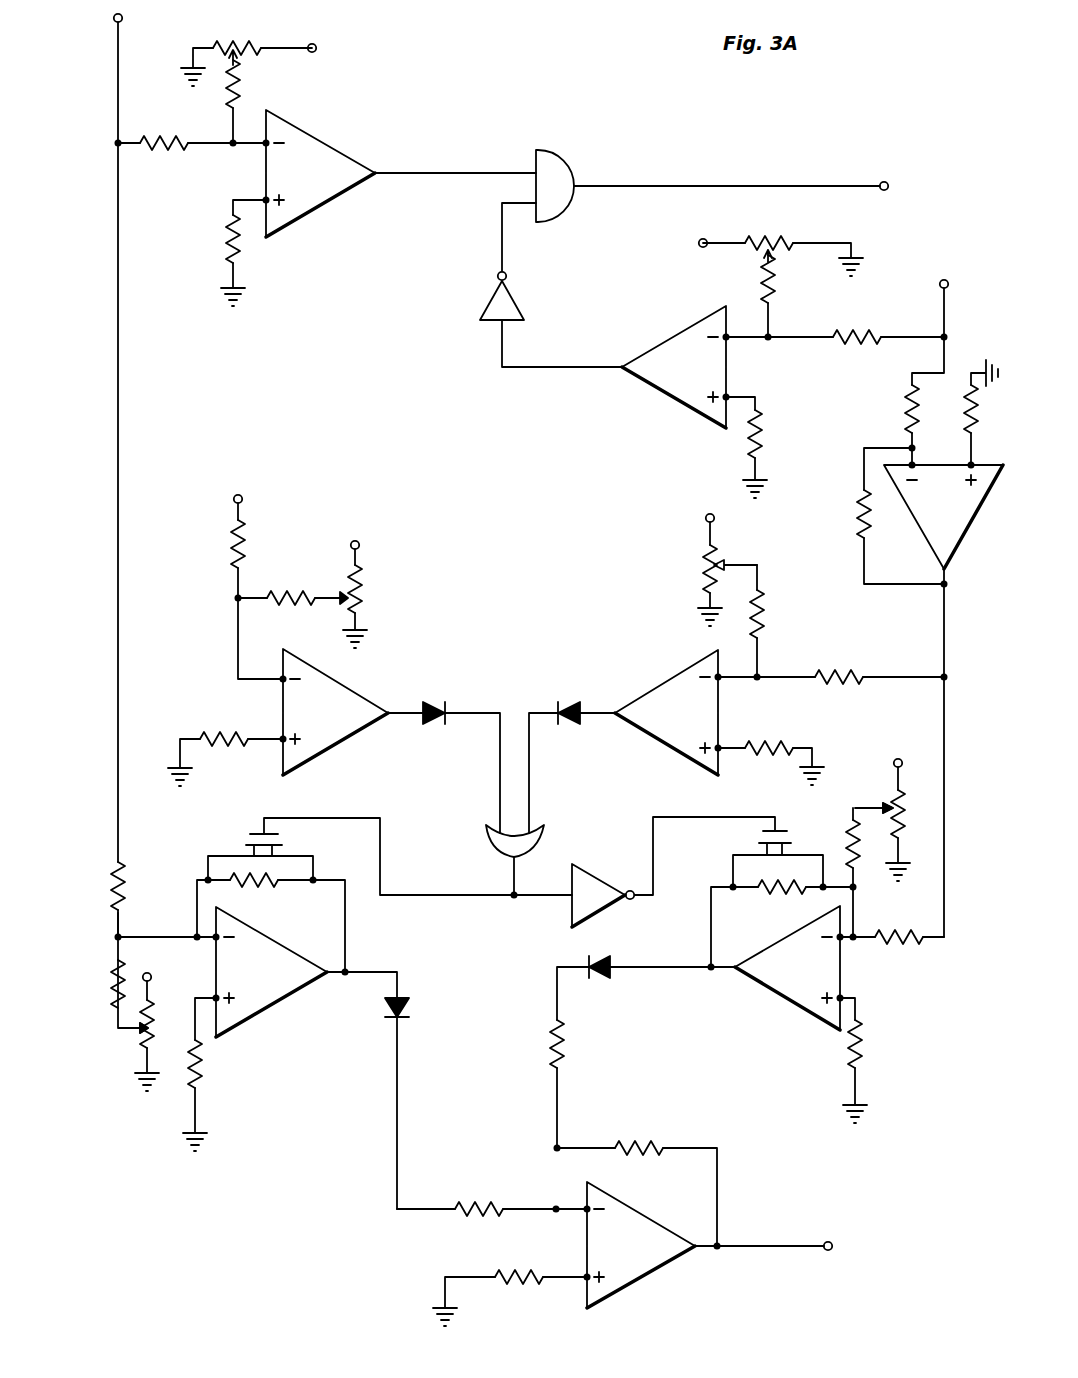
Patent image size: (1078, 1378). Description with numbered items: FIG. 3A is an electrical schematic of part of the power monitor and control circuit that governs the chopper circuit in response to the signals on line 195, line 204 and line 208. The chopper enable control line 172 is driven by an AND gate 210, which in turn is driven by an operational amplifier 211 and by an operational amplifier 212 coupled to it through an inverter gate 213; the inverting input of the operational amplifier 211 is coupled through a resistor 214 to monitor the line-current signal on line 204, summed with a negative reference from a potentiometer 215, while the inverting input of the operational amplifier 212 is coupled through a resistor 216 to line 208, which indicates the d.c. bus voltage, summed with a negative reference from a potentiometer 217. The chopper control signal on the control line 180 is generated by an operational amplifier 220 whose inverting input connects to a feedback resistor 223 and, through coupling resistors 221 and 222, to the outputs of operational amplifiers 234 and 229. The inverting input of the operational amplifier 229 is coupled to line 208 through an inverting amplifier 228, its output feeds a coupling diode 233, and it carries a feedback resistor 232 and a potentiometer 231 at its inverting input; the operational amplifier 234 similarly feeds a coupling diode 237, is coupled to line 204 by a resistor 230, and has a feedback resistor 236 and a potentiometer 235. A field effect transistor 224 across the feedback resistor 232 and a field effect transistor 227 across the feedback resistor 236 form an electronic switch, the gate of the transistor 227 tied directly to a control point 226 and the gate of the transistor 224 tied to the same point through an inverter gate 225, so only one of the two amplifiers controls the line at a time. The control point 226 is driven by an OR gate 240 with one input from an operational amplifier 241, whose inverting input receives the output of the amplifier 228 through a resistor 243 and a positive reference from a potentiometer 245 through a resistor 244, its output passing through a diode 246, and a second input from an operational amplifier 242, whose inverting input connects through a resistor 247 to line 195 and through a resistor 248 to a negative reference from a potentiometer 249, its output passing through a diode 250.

The line 204 is at (124, 17).
The resistor 214 is at (166, 150).
The potentiometer 215 is at (250, 45).
The operational amplifier 211 is at (328, 184).
The AND gate 210 is at (566, 168).
The inverter gate 213 is at (524, 302).
The operational amplifier 212 is at (700, 378).
The potentiometer 217 is at (770, 240).
The resistor 216 is at (866, 330).
The line 208 is at (948, 280).
The chopper enable control line 172 is at (880, 182).
The inverting amplifier 228 is at (961, 516).
The resistor 243 is at (832, 674).
The potentiometer 245 is at (703, 570).
The resistor 244 is at (770, 614).
The operational amplifier 241 is at (687, 726).
The diode 246 is at (576, 726).
The line 195 is at (242, 495).
The resistor 247 is at (232, 558).
The resistor 248 is at (288, 592).
The potentiometer 249 is at (362, 592).
The operational amplifier 242 is at (336, 718).
The diode 250 is at (420, 722).
The OR gate 240 is at (496, 854).
The control point 226 is at (512, 900).
The inverter gate 225 is at (604, 924).
The field effect transistor 224 is at (786, 834).
The feedback resistor 232 is at (778, 897).
The potentiometer 231 is at (890, 792).
The operational amplifier 229 is at (807, 979).
The coupling diode 233 is at (600, 978).
The coupling resistor 222 is at (554, 1060).
The feedback resistor 223 is at (650, 1145).
The field effect transistor 227 is at (255, 835).
The feedback resistor 236 is at (270, 888).
The resistor 230 is at (124, 886).
The operational amplifier 234 is at (272, 982).
The potentiometer 235 is at (140, 1058).
The coupling diode 237 is at (382, 1005).
The coupling resistor 221 is at (480, 1205).
The operational amplifier 220 is at (643, 1256).
The control line 180 is at (826, 1242).